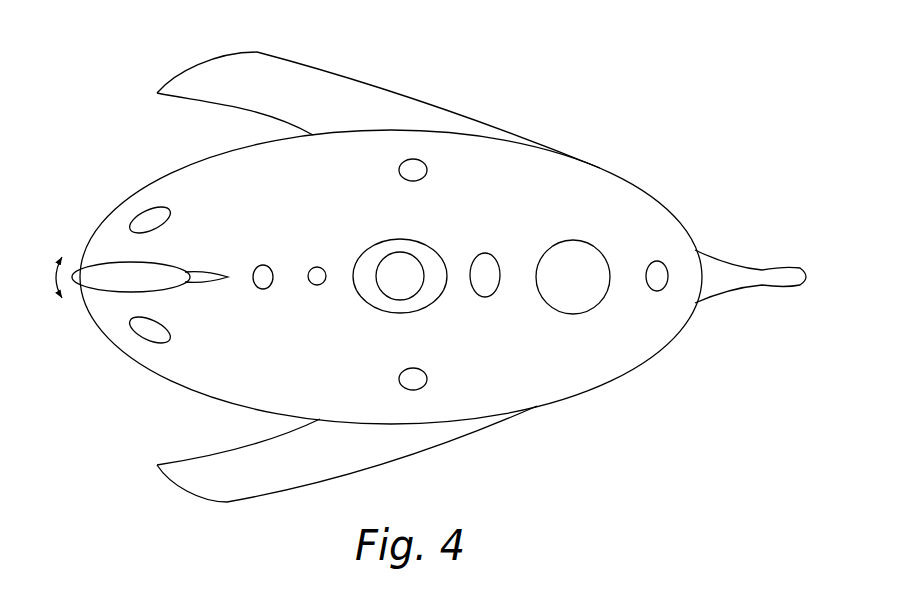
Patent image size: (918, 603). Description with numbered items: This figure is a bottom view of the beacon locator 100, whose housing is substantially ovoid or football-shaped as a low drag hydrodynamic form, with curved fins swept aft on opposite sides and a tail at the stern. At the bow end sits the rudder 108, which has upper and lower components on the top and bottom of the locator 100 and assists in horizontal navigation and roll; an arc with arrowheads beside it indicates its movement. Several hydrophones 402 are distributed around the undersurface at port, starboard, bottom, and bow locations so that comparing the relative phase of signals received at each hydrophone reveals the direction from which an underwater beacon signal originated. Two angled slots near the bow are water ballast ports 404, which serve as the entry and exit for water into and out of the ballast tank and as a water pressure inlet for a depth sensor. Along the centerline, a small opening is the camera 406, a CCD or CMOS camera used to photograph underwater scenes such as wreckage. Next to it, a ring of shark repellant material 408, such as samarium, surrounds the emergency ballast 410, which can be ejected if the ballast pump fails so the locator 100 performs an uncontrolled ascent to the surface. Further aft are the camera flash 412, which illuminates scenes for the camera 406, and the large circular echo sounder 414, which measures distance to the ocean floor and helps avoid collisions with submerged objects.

The locator 100 is at (668, 88).
The rudder 108 is at (118, 297).
The hydrophones 402 is at (426, 160).
The water ballast port 404 is at (143, 208).
The camera 406 is at (313, 287).
The shark repellant material 408 is at (384, 306).
The emergency ballast 410 is at (402, 281).
The camera flash 412 is at (494, 293).
The echo sounder 414 is at (600, 304).